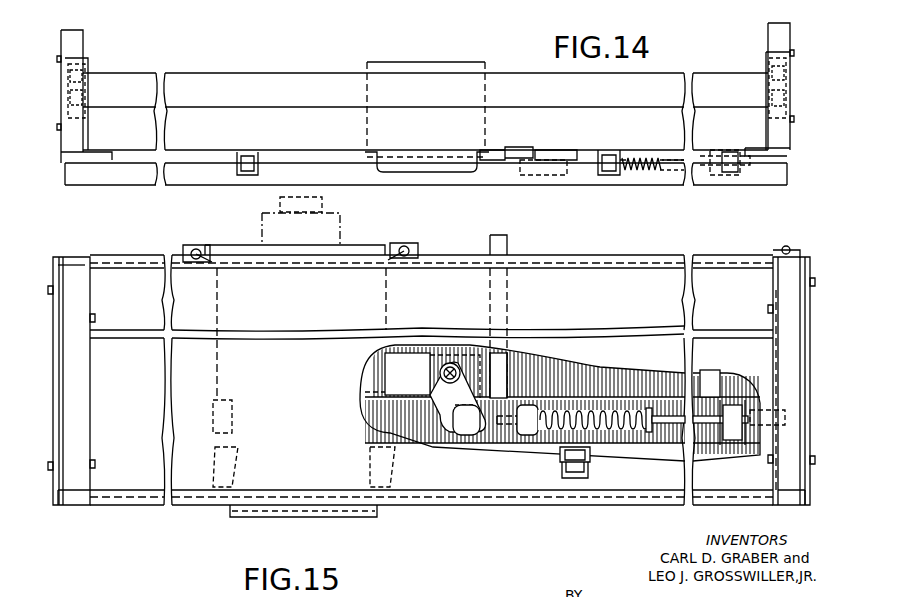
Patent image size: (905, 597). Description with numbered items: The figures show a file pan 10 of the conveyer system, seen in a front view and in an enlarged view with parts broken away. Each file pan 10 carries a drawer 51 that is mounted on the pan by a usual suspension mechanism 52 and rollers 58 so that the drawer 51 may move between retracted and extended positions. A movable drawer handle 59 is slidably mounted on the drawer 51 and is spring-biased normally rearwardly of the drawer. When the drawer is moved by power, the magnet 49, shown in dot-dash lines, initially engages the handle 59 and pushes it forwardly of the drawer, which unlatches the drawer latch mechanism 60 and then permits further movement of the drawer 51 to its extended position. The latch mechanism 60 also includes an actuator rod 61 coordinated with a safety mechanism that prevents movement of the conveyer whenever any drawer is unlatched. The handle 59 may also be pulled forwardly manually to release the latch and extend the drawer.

In FIG. 14, the file pan 10 is at (110, 172).
In FIG. 15, the file pan 10 is at (55, 372).
In FIG. 15, the magnet 49 is at (340, 226).
In FIG. 14, the drawer 51 is at (337, 118).
In FIG. 15, the drawer 51 is at (125, 483).
In FIG. 14, the suspension mechanism 52 is at (82, 82).
In FIG. 15, the suspension mechanism 52 is at (787, 455).
In FIG. 14, the rollers 58 is at (250, 160).
In FIG. 15, the rollers 58 is at (577, 462).
In FIG. 14, the drawer handle 59 is at (447, 168).
In FIG. 15, the drawer handle 59 is at (313, 513).
In FIG. 15, the drawer latch mechanism 60 is at (434, 420).
In FIG. 15, the actuator rod 61 is at (665, 412).